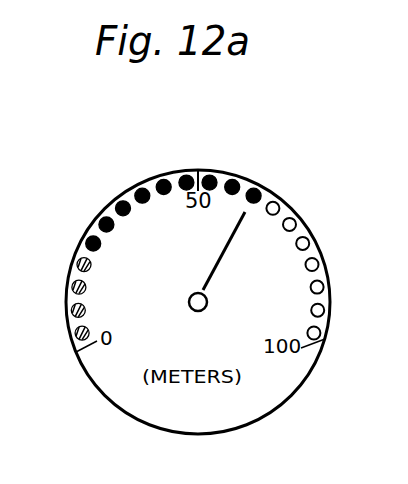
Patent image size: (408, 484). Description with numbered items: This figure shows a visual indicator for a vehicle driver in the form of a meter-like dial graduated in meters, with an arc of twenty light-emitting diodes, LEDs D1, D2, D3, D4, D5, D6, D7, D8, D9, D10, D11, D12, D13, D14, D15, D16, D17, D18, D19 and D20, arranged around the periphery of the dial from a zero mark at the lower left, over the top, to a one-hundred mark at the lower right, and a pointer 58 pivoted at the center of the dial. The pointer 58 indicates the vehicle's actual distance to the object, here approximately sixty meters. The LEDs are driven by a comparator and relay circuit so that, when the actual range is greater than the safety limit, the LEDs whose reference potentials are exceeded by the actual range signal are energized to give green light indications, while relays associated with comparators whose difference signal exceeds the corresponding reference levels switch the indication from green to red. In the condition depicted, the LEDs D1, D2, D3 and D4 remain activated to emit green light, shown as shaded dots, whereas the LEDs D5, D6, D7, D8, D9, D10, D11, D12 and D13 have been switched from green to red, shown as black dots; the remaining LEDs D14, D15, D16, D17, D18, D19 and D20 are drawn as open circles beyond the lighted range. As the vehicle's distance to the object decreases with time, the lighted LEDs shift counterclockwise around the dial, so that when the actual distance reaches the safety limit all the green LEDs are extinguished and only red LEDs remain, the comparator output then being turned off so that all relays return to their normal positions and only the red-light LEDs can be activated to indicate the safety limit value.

The pointer 58 is at (210, 277).
The LED D1 is at (74, 335).
The LED D2 is at (70, 311).
The LED D3 is at (71, 286).
The LED D4 is at (76, 262).
The LED D5 is at (86, 240).
The LED D6 is at (100, 219).
The LED D7 is at (118, 202).
The LED D8 is at (139, 189).
The LED D9 is at (161, 179).
The LED D10 is at (186, 175).
The LED D11 is at (210, 175).
The LED D12 is at (234, 179).
The LED D13 is at (257, 189).
The LED D14 is at (278, 202).
The LED D15 is at (296, 219).
The LED D16 is at (310, 240).
The LED D17 is at (320, 262).
The LED D18 is at (325, 286).
The LED D19 is at (326, 311).
The LED D20 is at (322, 335).